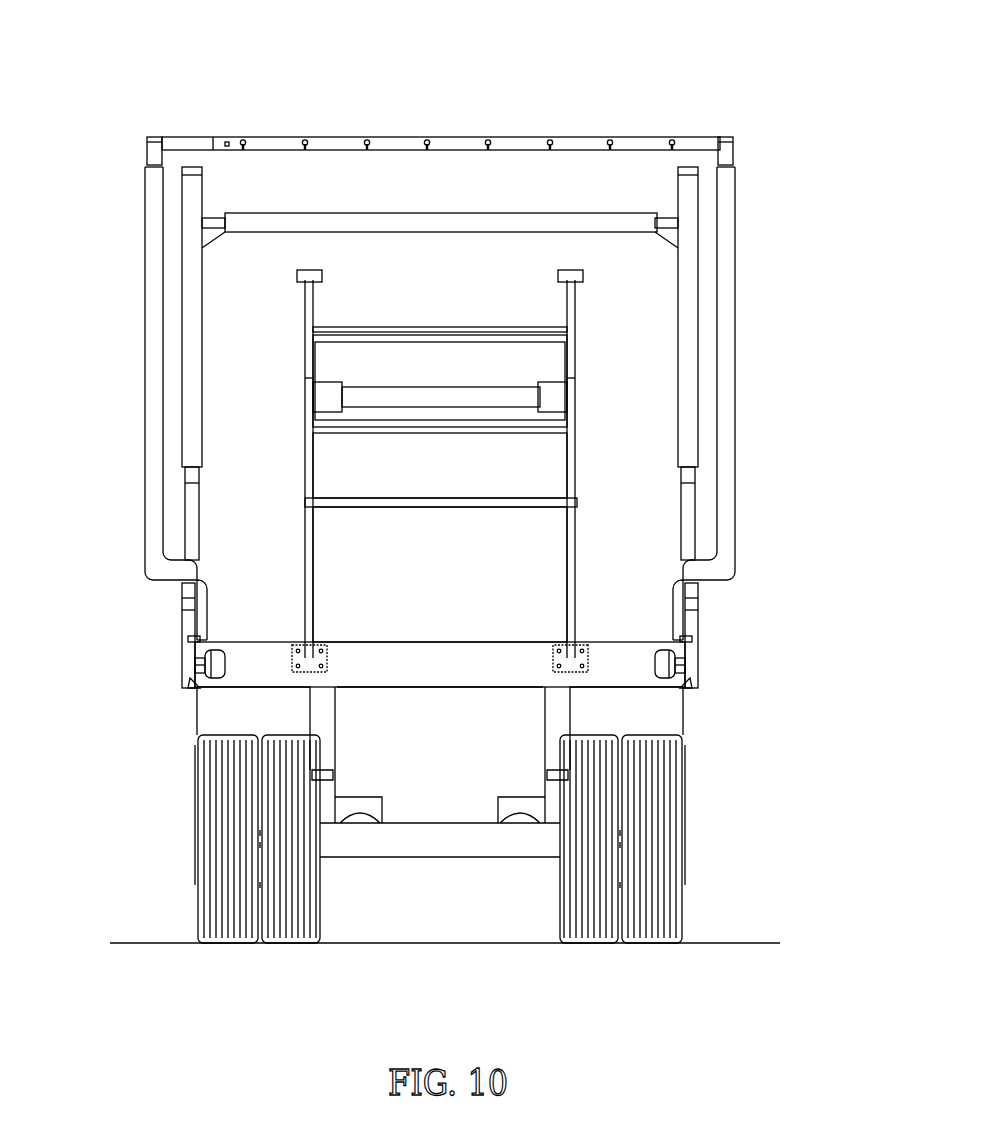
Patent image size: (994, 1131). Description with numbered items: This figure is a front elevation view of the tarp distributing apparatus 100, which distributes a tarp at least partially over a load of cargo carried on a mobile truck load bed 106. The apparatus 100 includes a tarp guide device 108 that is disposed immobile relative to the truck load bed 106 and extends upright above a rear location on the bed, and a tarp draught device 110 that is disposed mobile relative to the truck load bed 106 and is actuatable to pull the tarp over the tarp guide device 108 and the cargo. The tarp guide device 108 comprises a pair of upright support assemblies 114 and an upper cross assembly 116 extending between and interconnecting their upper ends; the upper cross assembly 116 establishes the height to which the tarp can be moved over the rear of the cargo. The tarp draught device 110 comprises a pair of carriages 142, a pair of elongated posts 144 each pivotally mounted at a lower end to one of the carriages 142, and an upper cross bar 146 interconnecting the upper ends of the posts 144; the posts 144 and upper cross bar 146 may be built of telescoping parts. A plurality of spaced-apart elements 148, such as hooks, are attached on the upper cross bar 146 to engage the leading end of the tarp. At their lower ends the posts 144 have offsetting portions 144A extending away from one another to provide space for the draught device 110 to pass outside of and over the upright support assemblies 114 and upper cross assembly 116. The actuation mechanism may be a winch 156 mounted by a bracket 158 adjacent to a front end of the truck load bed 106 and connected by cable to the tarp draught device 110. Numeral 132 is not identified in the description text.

The tarp distributing apparatus 100 is at (746, 54).
The truck load bed 106 is at (421, 642).
The tarp guide device 108 is at (484, 205).
The tarp draught device 110 is at (459, 123).
The upright support assemblies 114 is at (208, 378).
The upper cross assembly 116 is at (303, 202).
The clamp 132 is at (192, 690).
The carriages 142 is at (168, 626).
The elongated posts 144 is at (145, 300).
The offsetting portions 144A is at (175, 560).
The upper cross bar 146 is at (646, 137).
The elements 148 is at (305, 137).
The winch 156 is at (421, 387).
The bracket 158 is at (315, 570).